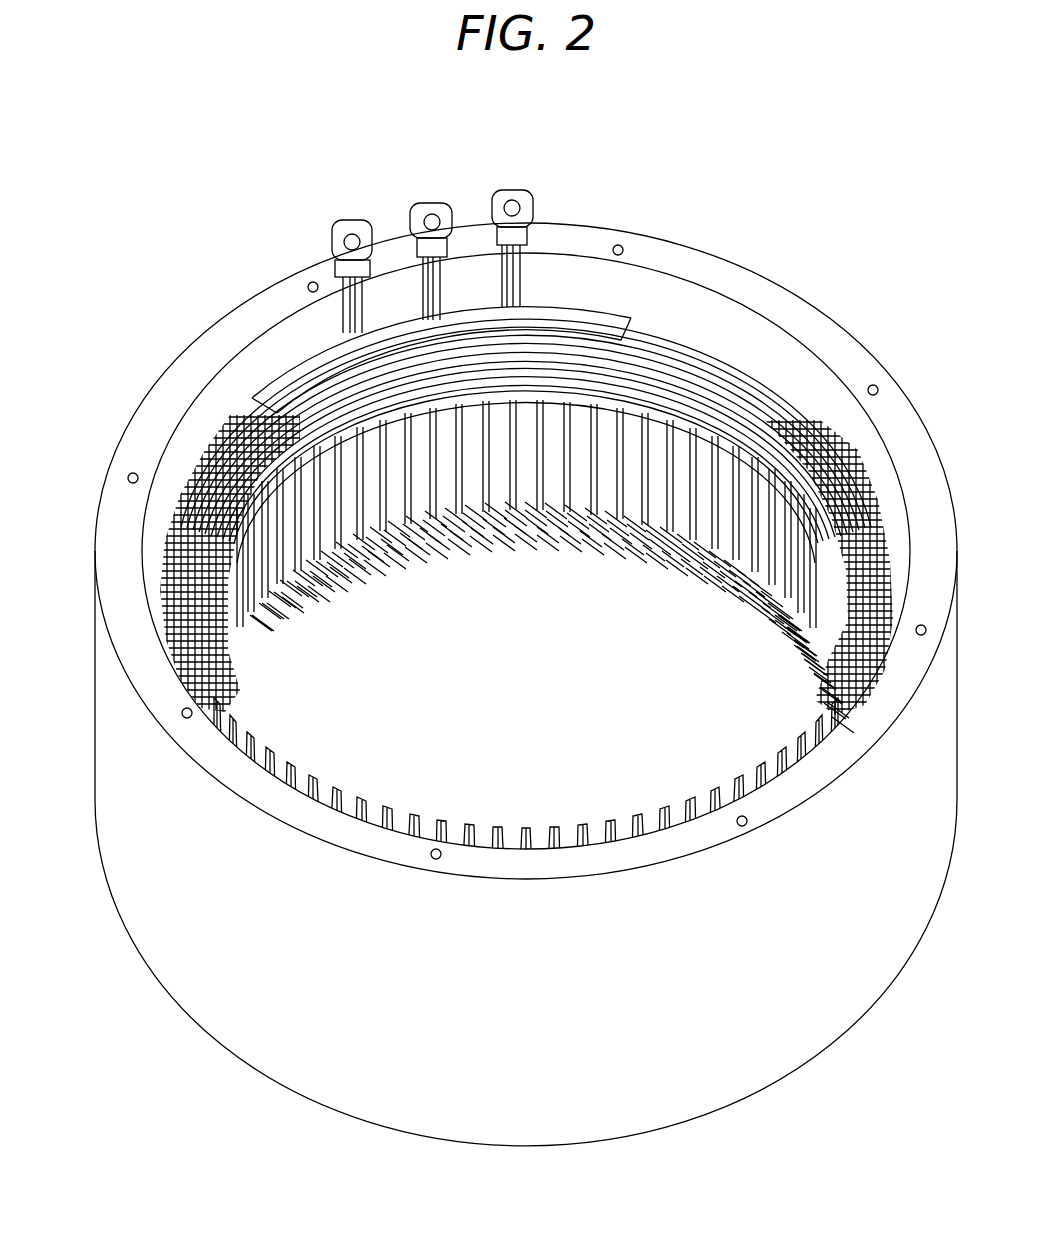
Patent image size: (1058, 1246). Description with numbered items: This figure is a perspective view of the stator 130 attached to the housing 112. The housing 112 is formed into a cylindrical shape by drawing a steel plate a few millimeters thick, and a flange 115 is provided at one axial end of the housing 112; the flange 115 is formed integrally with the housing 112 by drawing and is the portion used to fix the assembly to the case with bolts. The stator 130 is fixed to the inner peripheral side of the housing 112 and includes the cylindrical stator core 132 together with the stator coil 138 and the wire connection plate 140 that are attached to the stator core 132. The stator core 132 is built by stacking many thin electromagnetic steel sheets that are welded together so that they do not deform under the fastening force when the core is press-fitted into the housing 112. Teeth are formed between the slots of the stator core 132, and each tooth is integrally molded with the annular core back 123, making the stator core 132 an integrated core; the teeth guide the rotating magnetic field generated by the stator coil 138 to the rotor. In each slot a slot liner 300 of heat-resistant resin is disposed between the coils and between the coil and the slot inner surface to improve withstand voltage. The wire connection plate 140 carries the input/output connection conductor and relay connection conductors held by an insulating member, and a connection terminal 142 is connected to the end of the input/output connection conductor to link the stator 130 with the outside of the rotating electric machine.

The housing 112 is at (152, 966).
The flange 115 is at (232, 316).
The core back 123 is at (690, 447).
The stator 130 is at (858, 277).
The stator core 132 is at (150, 590).
The stator coil 138 is at (205, 468).
The wire connection plate 140 is at (595, 305).
The connection terminal 142 is at (338, 232).
The slot liner 300 is at (745, 470).